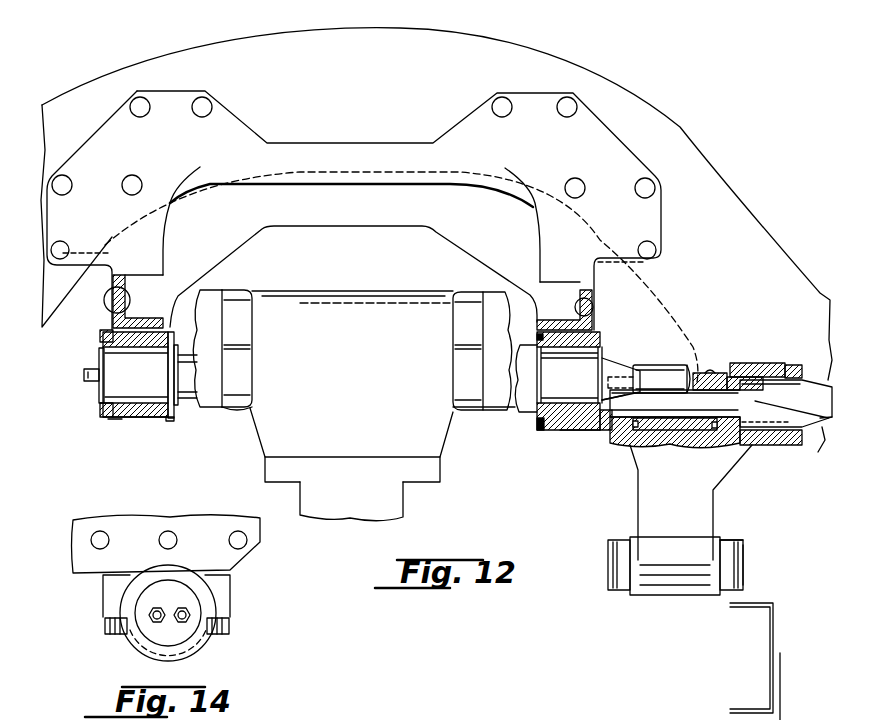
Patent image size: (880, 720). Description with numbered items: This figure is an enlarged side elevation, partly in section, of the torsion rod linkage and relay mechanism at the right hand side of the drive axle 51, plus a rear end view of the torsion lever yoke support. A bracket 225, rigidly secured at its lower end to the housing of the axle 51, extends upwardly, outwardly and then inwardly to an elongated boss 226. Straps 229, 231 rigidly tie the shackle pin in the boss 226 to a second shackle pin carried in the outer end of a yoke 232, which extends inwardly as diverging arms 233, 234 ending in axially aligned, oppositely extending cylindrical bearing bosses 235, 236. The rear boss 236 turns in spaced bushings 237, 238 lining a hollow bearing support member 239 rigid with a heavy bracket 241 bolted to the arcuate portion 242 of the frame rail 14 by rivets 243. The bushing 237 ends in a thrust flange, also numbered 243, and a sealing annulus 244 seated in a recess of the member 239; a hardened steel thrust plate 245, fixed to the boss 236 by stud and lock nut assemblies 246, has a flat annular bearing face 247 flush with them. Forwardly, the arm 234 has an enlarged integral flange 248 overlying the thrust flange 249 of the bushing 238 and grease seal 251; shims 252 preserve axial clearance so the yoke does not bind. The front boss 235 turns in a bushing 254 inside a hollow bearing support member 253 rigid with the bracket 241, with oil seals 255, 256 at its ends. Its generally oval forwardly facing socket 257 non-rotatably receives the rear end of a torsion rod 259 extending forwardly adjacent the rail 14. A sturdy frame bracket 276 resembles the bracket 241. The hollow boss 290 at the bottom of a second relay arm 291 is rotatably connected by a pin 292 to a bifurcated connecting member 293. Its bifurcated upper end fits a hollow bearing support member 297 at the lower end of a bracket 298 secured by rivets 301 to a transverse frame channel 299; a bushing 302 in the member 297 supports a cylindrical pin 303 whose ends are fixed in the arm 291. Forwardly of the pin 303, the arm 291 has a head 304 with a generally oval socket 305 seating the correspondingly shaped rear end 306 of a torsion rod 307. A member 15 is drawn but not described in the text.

In FIG. 12, the frame rail 14 is at (792, 281).
In FIG. 12, the channel bracket 15 is at (777, 625).
In FIG. 12, the drive axle 51 is at (399, 503).
In FIG. 12, the bracket 225 is at (447, 433).
In FIG. 12, the elongated boss 226 is at (233, 292).
In FIG. 12, the strap 229 is at (492, 292).
In FIG. 12, the strap 231 is at (207, 292).
In FIG. 12, the yoke 232 is at (489, 420).
In FIG. 12, the arm 233 is at (515, 413).
In FIG. 12, the arm 234 is at (232, 413).
In FIG. 12, the front boss 235 is at (602, 350).
In FIG. 12, the rear boss 236 is at (150, 380).
In FIG. 12, the bushing 237 is at (134, 418).
In FIG. 12, the bushing 238 is at (160, 401).
In FIG. 12, the hollow bearing support member 239 is at (158, 327).
In FIG. 14, the hollow bearing support member 239 is at (236, 588).
In FIG. 12, the heavy bracket 241 is at (268, 236).
In FIG. 12, the arcuate portion 242 is at (354, 210).
In FIG. 12, the rivets 243 is at (196, 113).
In FIG. 12, the sealing annulus 244 is at (118, 430).
In FIG. 12, the hardened steel thrust plate 245 is at (99, 400).
In FIG. 14, the hardened steel thrust plate 245 is at (133, 605).
In FIG. 12, the stud and lock nut assemblies 246 is at (92, 368).
In FIG. 14, the stud and lock nut assemblies 246 is at (190, 607).
In FIG. 12, the flat annular bearing face 247 is at (103, 333).
In FIG. 12, the enlarged integral flange 248 is at (172, 335).
In FIG. 12, the thrust flange 249 is at (179, 418).
In FIG. 12, the grease seal 251 is at (172, 422).
In FIG. 12, the shims 252 is at (101, 405).
In FIG. 12, the hollow bearing support member 253 is at (604, 431).
In FIG. 12, the bushing 254 is at (572, 431).
In FIG. 12, the oil seal 255 is at (608, 402).
In FIG. 12, the oil seal 256 is at (542, 431).
In FIG. 12, the oval forwardly facing socket 257 is at (573, 352).
In FIG. 12, the torsion rod 259 is at (663, 369).
In FIG. 12, the frame bracket 276 is at (781, 708).
In FIG. 12, the hollow boss 290 is at (660, 595).
In FIG. 12, the relay arm 291 is at (714, 510).
In FIG. 12, the pin 292 is at (744, 568).
In FIG. 12, the bifurcated connecting member 293 is at (742, 542).
In FIG. 12, the hollow bearing support member 297 is at (698, 372).
In FIG. 12, the bracket 298 is at (668, 302).
In FIG. 12, the transverse frame channel 299 is at (595, 306).
In FIG. 12, the rivets 301 is at (575, 307).
In FIG. 12, the bushing 302 is at (672, 443).
In FIG. 12, the cylindrical pin 303 is at (741, 393).
In FIG. 12, the head 304 is at (760, 363).
In FIG. 12, the oval socket 305 is at (793, 365).
In FIG. 12, the rear end 306 is at (748, 445).
In FIG. 12, the torsion rod 307 is at (822, 428).